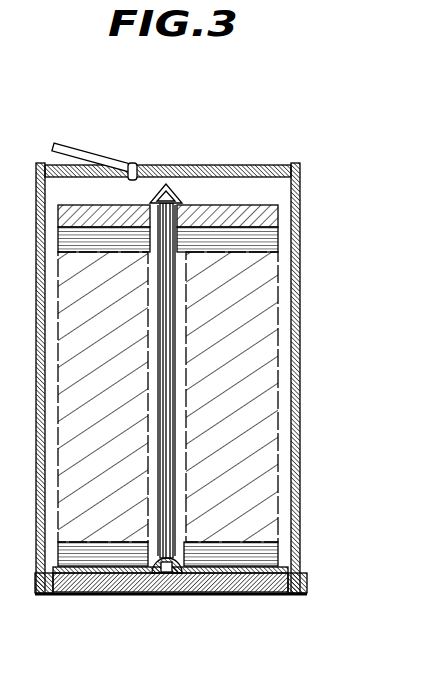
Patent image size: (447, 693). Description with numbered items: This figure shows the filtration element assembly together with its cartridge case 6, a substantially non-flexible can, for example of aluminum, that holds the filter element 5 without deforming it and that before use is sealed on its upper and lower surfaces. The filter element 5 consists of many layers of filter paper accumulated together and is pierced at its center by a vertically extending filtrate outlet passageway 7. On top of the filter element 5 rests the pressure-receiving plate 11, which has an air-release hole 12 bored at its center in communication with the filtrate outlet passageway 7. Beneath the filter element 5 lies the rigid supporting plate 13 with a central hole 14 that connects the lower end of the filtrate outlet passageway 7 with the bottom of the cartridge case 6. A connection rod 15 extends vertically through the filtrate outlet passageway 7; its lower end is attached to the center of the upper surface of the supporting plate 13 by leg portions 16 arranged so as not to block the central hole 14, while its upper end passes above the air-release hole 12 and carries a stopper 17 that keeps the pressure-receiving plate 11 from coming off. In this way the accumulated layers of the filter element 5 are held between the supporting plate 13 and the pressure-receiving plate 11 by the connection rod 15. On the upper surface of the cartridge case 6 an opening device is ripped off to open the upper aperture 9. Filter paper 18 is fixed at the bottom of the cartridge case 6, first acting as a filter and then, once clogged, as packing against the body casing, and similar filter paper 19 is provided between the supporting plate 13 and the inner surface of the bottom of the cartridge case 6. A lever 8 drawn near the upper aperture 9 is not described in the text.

The filter element 5 is at (235, 424).
The cartridge case 6 is at (300, 291).
The filtrate outlet passageway 7 is at (181, 324).
The lever 8 is at (92, 152).
The upper aperture 9 is at (238, 172).
The pressure-receiving plate 11 is at (277, 215).
The air-release hole 12 is at (153, 194).
The supporting plate 13 is at (106, 593).
The central hole 14 is at (163, 594).
The connection rod 15 is at (175, 361).
The leg portions 16 is at (178, 575).
The stopper 17 is at (177, 188).
The filter paper 18 is at (250, 594).
The filter paper 19 is at (71, 594).